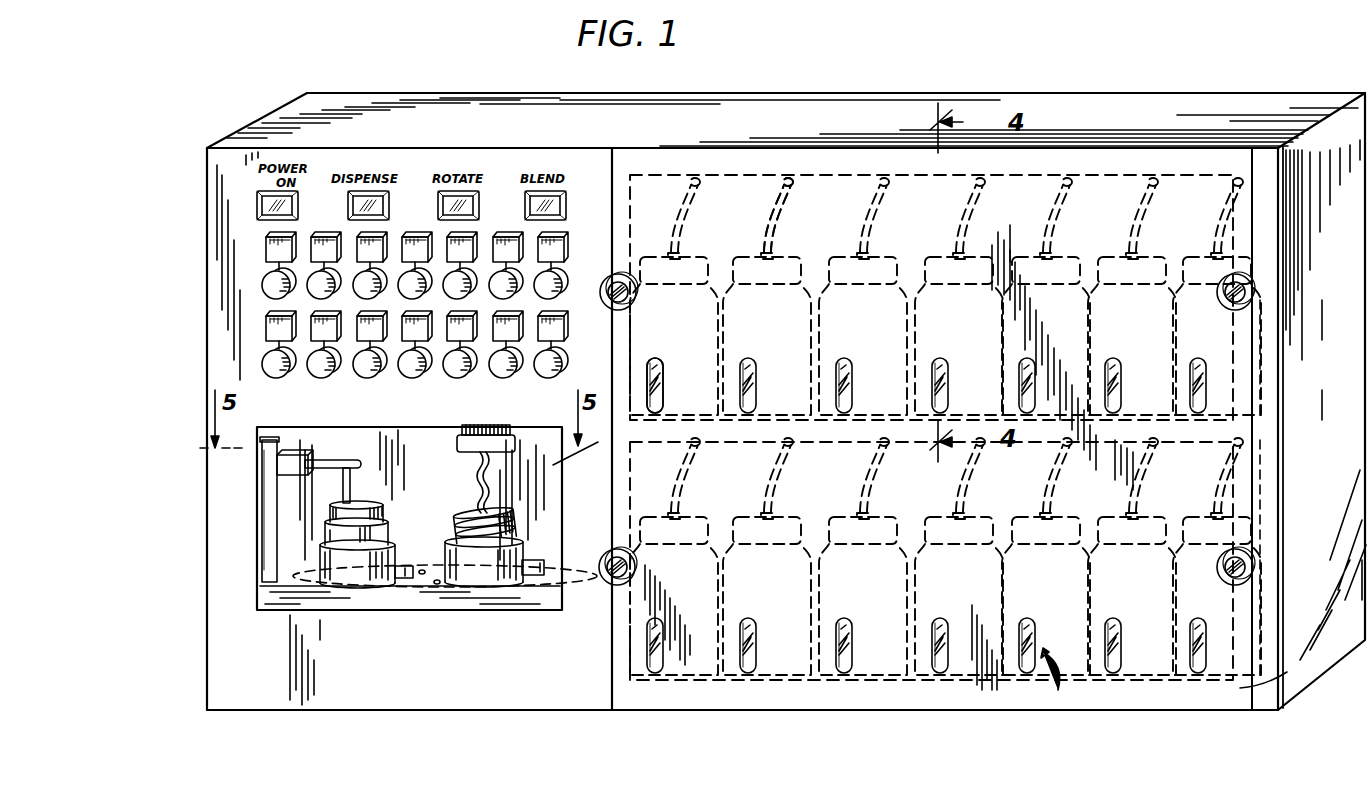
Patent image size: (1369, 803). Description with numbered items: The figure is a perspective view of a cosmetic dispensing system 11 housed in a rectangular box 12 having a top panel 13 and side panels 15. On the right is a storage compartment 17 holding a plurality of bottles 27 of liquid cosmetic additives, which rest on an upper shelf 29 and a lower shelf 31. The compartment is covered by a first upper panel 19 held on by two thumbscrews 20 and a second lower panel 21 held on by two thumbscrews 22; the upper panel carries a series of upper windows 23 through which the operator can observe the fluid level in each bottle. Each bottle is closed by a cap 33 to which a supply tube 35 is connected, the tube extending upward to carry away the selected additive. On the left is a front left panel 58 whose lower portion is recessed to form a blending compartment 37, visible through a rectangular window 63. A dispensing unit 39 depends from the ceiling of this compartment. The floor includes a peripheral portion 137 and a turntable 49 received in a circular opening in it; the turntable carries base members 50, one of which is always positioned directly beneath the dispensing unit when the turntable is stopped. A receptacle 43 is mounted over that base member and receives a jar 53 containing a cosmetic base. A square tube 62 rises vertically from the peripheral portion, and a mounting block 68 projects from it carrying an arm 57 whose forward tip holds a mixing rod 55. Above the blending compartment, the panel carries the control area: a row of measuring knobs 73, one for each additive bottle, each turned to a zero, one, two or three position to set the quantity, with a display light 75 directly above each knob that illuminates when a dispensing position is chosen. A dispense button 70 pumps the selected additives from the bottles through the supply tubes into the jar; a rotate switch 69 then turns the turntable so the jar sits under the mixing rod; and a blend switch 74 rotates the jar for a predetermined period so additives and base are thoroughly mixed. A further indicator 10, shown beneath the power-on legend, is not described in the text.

The power on indicator 10 is at (292, 206).
The cosmetic dispensing system 11 is at (203, 708).
The rectangular box 12 is at (263, 412).
The top panel 13 is at (345, 106).
The side panels 15 is at (1365, 94).
The storage compartment 17 is at (1145, 172).
The first upper panel 19 is at (945, 287).
The thumbscrews 20 is at (626, 276).
The second lower panel 21 is at (1213, 475).
The thumbscrews 22 is at (1254, 567).
The upper windows 23 is at (742, 358).
The bottles 27 is at (945, 590).
The upper shelf 29 is at (1240, 432).
The lower shelf 31 is at (1292, 665).
The cap 33 is at (814, 521).
The supply tube 35 is at (858, 218).
The blending compartment 37 is at (407, 543).
The dispensing unit 39 is at (458, 446).
The receptacle 43 is at (340, 578).
The turntable 49 is at (397, 588).
The base members 50 is at (411, 577).
The jar 53 is at (392, 533).
The mixing rod 55 is at (350, 481).
The arm 57 is at (346, 471).
The front left panel 58 is at (266, 697).
The square tube 62 is at (264, 553).
The rectangular window 63 is at (407, 441).
The mounting block 68 is at (299, 478).
The rotate switch 69 is at (473, 205).
The dispense button 70 is at (385, 206).
The measuring knobs 73 is at (560, 288).
The blend switch 74 is at (562, 207).
The display light 75 is at (556, 240).
The peripheral portion 137 is at (286, 602).